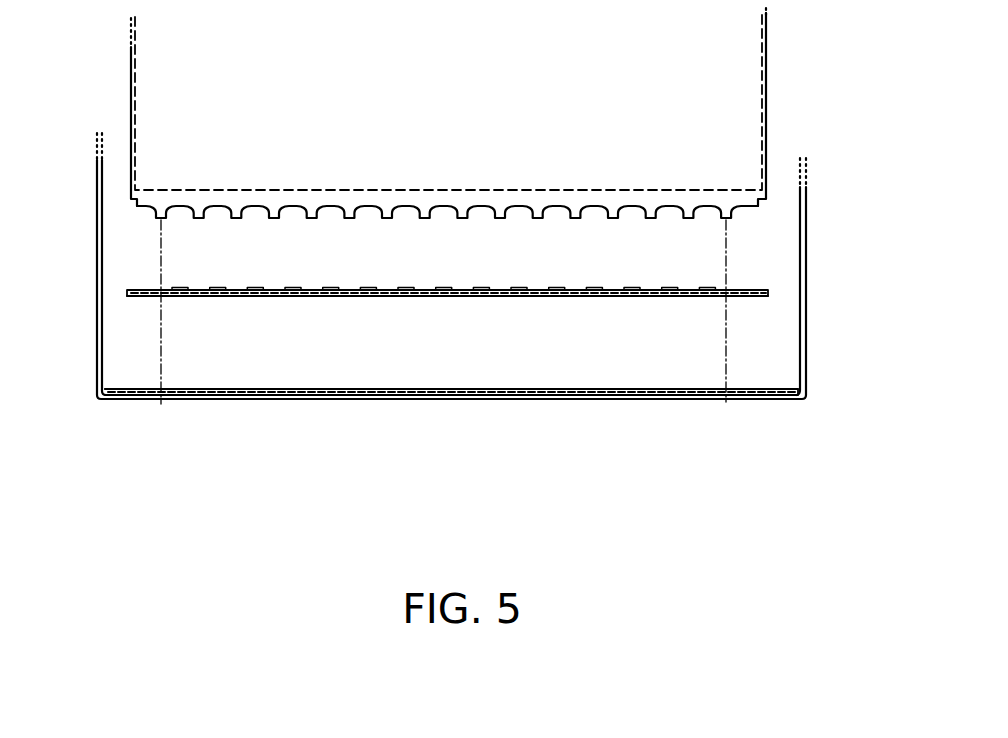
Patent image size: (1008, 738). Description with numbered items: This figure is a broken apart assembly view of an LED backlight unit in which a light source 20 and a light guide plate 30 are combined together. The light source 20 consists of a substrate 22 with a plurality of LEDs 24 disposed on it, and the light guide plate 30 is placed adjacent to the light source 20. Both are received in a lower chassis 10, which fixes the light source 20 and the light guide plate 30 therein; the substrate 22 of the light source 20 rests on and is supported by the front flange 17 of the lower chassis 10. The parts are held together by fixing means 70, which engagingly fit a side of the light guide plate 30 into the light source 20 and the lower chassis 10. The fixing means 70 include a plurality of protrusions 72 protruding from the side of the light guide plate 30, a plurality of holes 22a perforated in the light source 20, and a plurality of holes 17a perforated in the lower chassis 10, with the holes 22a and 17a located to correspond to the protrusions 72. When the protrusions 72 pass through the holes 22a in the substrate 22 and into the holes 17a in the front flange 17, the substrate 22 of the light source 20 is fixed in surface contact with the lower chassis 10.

The lower chassis 10 is at (494, 310).
The front flange 17 is at (480, 396).
The holes 17a is at (345, 397).
The light source 20 is at (502, 283).
The substrate 22 is at (768, 293).
The holes 22a is at (501, 296).
The LEDs 24 is at (256, 289).
The light guide plate 30 is at (743, 75).
The fixing means 70 is at (143, 270).
The protrusions 72 is at (311, 219).